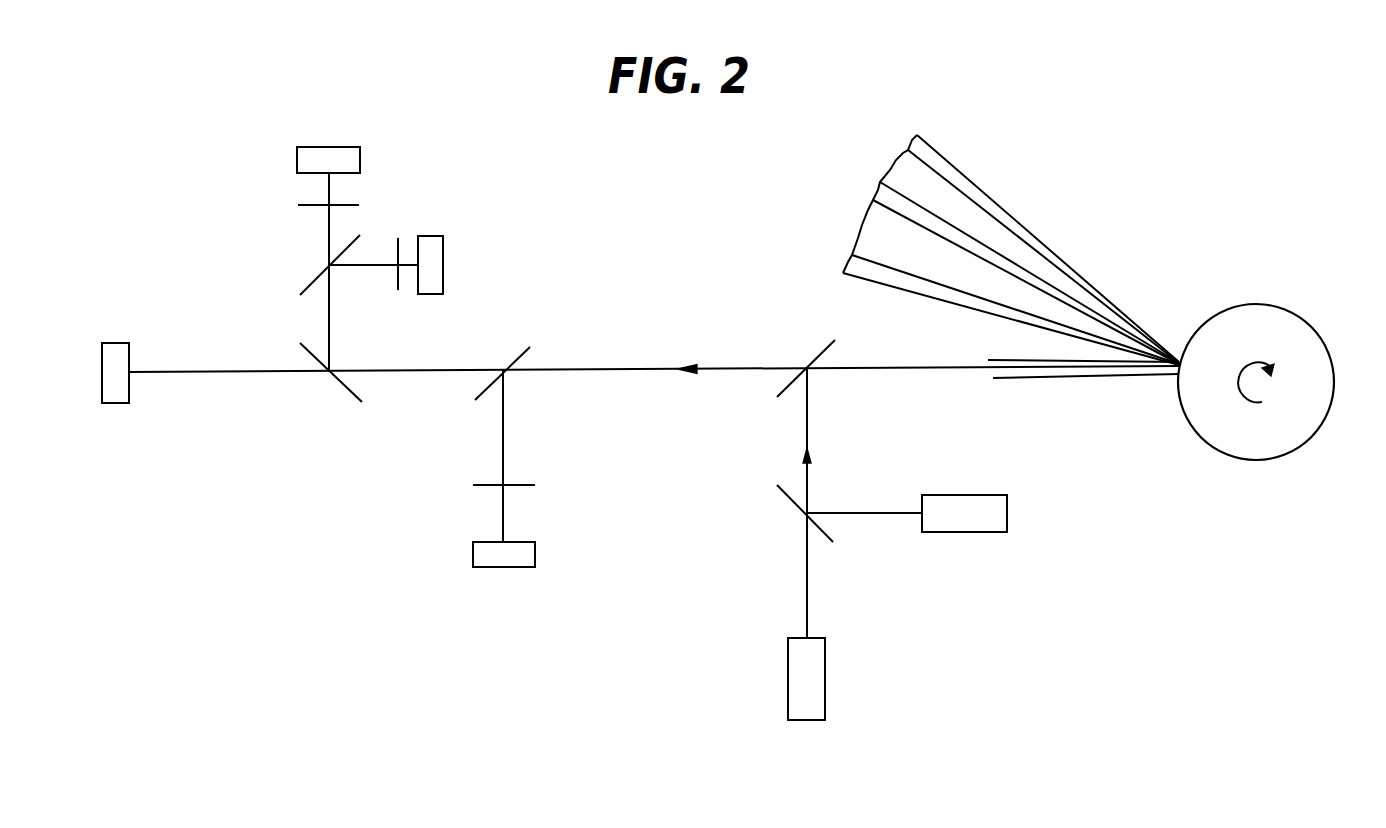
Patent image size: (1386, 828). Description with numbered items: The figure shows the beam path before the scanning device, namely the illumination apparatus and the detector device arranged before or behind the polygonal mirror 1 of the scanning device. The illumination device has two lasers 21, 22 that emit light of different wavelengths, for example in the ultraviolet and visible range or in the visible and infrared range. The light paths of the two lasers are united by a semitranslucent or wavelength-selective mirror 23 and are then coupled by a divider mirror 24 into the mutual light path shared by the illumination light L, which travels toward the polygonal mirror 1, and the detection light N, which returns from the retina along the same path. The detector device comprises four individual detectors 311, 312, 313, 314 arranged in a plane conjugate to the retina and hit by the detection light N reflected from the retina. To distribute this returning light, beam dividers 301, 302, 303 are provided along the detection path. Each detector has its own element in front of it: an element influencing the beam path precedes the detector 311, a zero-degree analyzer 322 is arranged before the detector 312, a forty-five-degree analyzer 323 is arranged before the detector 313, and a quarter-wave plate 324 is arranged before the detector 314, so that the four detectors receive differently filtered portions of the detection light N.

The polygonal mirror 1 is at (1333, 358).
The laser 21 is at (1007, 510).
The laser 22 is at (825, 660).
The semitranslucent or wavelength-selective mirror 23 is at (792, 500).
The divider mirror 24 is at (821, 354).
The beam divider 301 is at (522, 355).
The beam divider 302 is at (352, 392).
The beam divider 303 is at (311, 287).
The detector 311 is at (129, 388).
The detector 312 is at (535, 550).
The detector 313 is at (443, 243).
The detector 314 is at (354, 147).
The 0° analyzer 322 is at (535, 485).
The 45° analyzer 323 is at (398, 290).
The quarter-wave plate 324 is at (359, 205).
The detection light N is at (715, 368).
The illumination light L is at (807, 428).